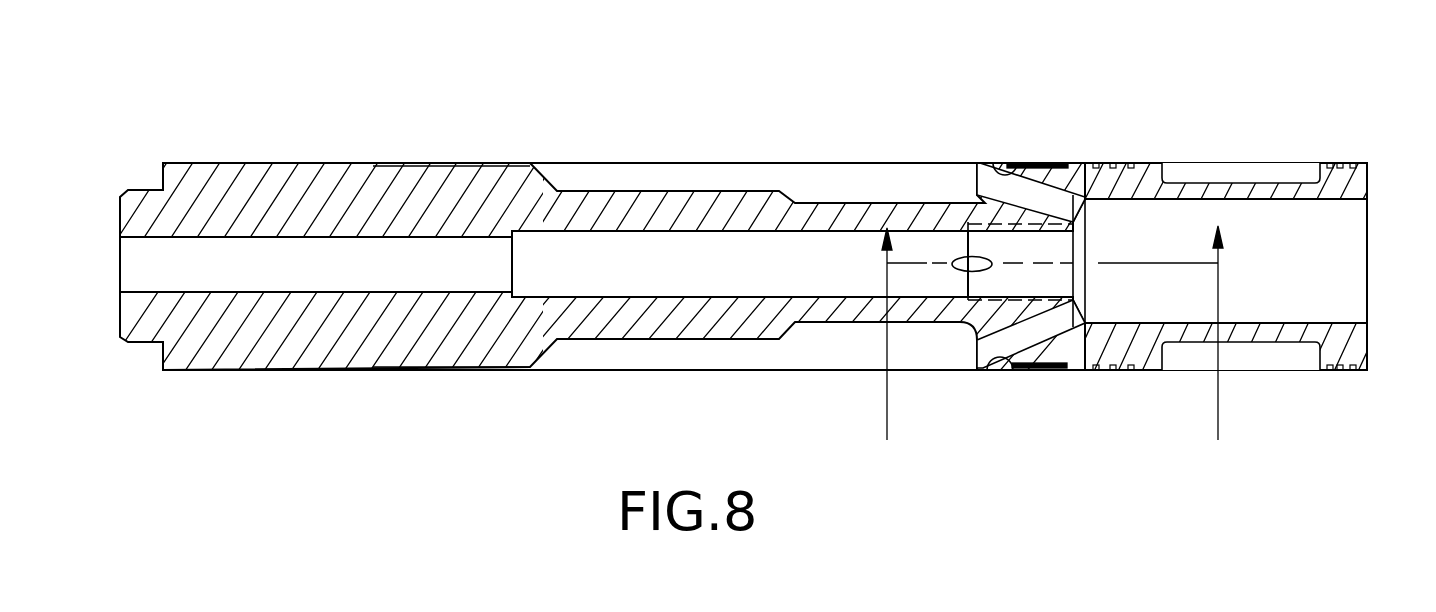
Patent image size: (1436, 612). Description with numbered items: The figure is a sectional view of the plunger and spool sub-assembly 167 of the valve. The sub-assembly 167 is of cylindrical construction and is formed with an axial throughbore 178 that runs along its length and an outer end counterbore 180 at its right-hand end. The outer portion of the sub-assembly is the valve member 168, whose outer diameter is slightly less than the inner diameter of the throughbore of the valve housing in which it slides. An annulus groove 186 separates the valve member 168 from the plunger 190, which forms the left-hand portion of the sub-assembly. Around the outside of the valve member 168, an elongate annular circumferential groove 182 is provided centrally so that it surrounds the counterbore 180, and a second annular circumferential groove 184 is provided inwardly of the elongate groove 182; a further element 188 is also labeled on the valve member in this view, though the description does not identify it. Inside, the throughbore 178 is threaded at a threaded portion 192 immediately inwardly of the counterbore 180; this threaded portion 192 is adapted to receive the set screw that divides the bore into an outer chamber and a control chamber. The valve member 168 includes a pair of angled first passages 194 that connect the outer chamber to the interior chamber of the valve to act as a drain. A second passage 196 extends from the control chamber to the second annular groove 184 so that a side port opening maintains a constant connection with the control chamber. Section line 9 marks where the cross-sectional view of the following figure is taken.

The sub-assembly 167 is at (689, 150).
The valve member 168 is at (1148, 153).
The axial throughbore 178 is at (597, 240).
The outer end counterbore 180 is at (1247, 199).
The elongate annular circumferential groove 182 is at (1267, 345).
The second annular circumferential groove 184 is at (1042, 372).
The annulus groove 186 is at (722, 190).
The ring 188 is at (1030, 167).
The plunger 190 is at (312, 178).
The threaded portion 192 is at (1038, 230).
The angled first passages 194 is at (993, 177).
The second passage 196 is at (965, 271).
The section line 9- 9 is at (1052, 352).